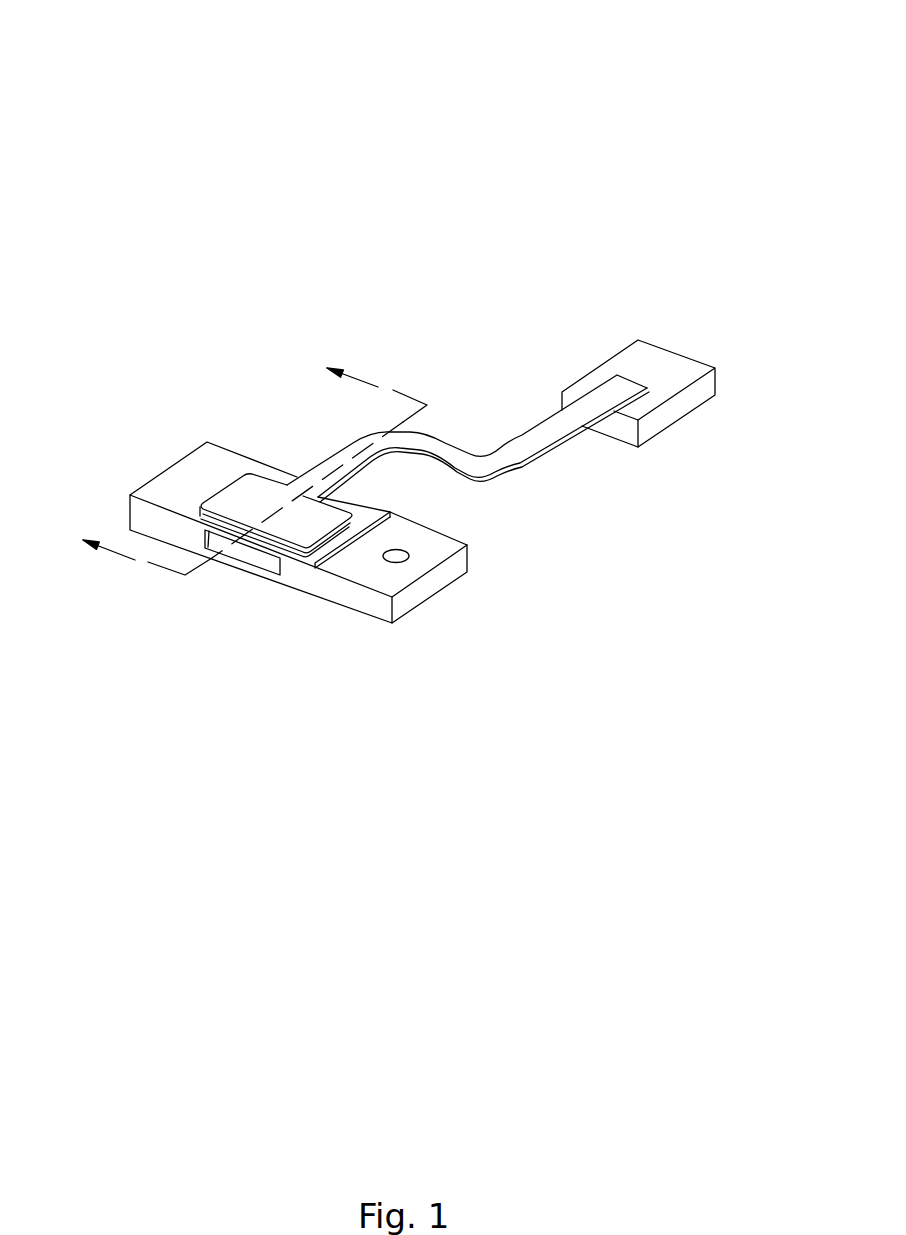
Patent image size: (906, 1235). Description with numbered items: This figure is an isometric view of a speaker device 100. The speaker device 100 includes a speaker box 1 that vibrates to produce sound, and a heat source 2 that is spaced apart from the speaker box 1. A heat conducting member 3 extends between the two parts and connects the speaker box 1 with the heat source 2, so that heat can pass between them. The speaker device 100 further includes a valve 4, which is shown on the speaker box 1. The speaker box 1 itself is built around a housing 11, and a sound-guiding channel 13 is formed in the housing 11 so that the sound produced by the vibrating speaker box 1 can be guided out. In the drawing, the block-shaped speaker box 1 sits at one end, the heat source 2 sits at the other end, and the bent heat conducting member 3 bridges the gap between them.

The speaker device 100 is at (388, 38).
The speaker box 1 is at (447, 573).
The housing 11 is at (373, 600).
The sound-guiding channel 13 is at (260, 558).
The valve 4 is at (396, 557).
The heat conducting member 3 is at (468, 452).
The heat source 2 is at (655, 368).